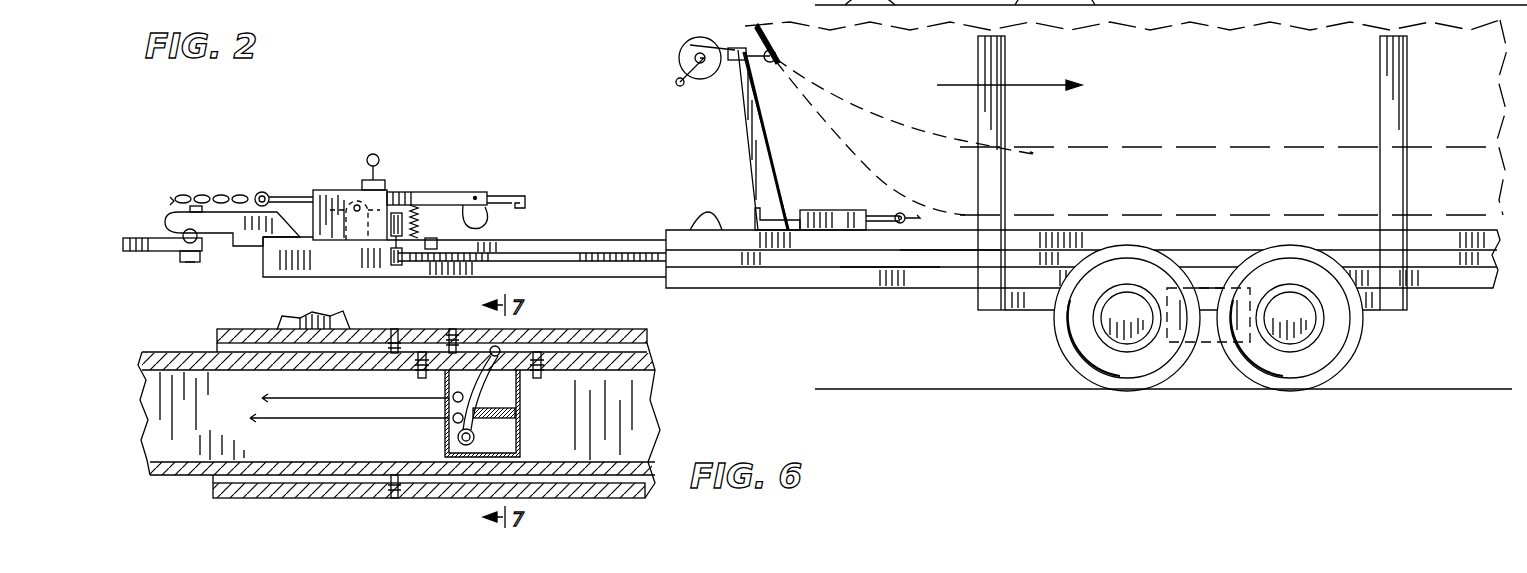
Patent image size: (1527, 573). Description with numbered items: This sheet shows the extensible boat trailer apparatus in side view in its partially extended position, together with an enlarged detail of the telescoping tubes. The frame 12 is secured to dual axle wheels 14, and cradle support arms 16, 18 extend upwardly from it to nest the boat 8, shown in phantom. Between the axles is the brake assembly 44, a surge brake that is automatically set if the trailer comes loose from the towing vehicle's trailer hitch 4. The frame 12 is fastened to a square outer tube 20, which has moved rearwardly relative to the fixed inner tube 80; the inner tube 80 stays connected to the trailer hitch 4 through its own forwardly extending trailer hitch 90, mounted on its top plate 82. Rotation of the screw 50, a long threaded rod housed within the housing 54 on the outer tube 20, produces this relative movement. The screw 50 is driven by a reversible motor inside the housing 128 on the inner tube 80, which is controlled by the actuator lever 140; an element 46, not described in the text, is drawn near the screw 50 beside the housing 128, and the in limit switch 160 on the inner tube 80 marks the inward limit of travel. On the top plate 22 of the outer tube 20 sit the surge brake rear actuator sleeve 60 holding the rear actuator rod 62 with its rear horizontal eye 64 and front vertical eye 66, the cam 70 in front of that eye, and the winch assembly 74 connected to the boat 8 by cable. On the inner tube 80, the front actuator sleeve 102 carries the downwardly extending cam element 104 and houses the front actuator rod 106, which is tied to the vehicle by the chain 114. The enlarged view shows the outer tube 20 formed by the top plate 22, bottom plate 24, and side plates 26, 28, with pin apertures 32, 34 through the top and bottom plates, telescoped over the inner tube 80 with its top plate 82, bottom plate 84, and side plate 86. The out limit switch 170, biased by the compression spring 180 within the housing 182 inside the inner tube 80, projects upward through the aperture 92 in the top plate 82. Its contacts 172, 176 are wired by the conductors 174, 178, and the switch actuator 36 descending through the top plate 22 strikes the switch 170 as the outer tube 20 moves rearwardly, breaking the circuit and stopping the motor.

In FIG. 2, the trailer hitch 4 is at (140, 250).
In FIG. 2, the boat 8 is at (750, 30).
In FIG. 2, the frame 12 is at (1023, 322).
In FIG. 2, the dual axle wheels 14 is at (1368, 360).
In FIG. 2, the cradle support arm 16 is at (1005, 140).
In FIG. 2, the cradle support arm 18 is at (1380, 115).
In FIG. 2, the outer tube 20 is at (735, 294).
In FIG. 6, the outer tube 20 is at (428, 415).
In FIG. 6, the top plate 22 is at (632, 332).
In FIG. 6, the bottom plate 24 is at (280, 498).
In FIG. 6, the side plate 26 is at (210, 350).
In FIG. 2, the side plate 28 is at (860, 290).
In FIG. 6, the pin aperture 32 is at (395, 329).
In FIG. 6, the pin aperture 34 is at (396, 498).
In FIG. 6, the switch actuator 36 is at (470, 330).
In FIG. 2, the brake assembly 44 is at (1208, 342).
In FIG. 2, the shaft plate 46 is at (390, 256).
In FIG. 2, the screw 50 is at (615, 262).
In FIG. 2, the housing 54 is at (910, 258).
In FIG. 2, the surge brake rear actuator sleeve 60 is at (826, 210).
In FIG. 2, the surge brake rear actuator rod 62 is at (882, 212).
In FIG. 2, the rear horizontal eye 64 is at (908, 213).
In FIG. 2, the front vertical eye 66 is at (752, 218).
In FIG. 2, the cam 70 is at (690, 222).
In FIG. 6, the cam 70 is at (343, 311).
In FIG. 2, the winch assembly 74 is at (740, 126).
In FIG. 2, the inner tube 80 is at (255, 272).
In FIG. 6, the inner tube 80 is at (155, 488).
In FIG. 6, the top plate 82 is at (175, 370).
In FIG. 6, the bottom plate 84 is at (190, 465).
In FIG. 6, the side plate 86 is at (222, 426).
In FIG. 2, the trailer hitch 90 is at (220, 246).
In FIG. 6, the aperture 92 is at (500, 347).
In FIG. 2, the surge brake front actuator sleeve 102 is at (452, 192).
In FIG. 2, the cam element 104 is at (478, 222).
In FIG. 2, the front brake actuator rod 106 is at (290, 192).
In FIG. 2, the chain 114 is at (194, 196).
In FIG. 2, the housing 128 is at (352, 190).
In FIG. 2, the actuator lever 140 is at (380, 170).
In FIG. 2, the in limit switch 160 is at (440, 250).
In FIG. 6, the out limit switch 170 is at (505, 387).
In FIG. 6, the contact 172 is at (448, 434).
In FIG. 6, the conductor 174 is at (342, 420).
In FIG. 6, the contact 176 is at (445, 388).
In FIG. 6, the conductor 178 is at (292, 396).
In FIG. 6, the compression spring 180 is at (520, 418).
In FIG. 6, the housing 182 is at (521, 440).